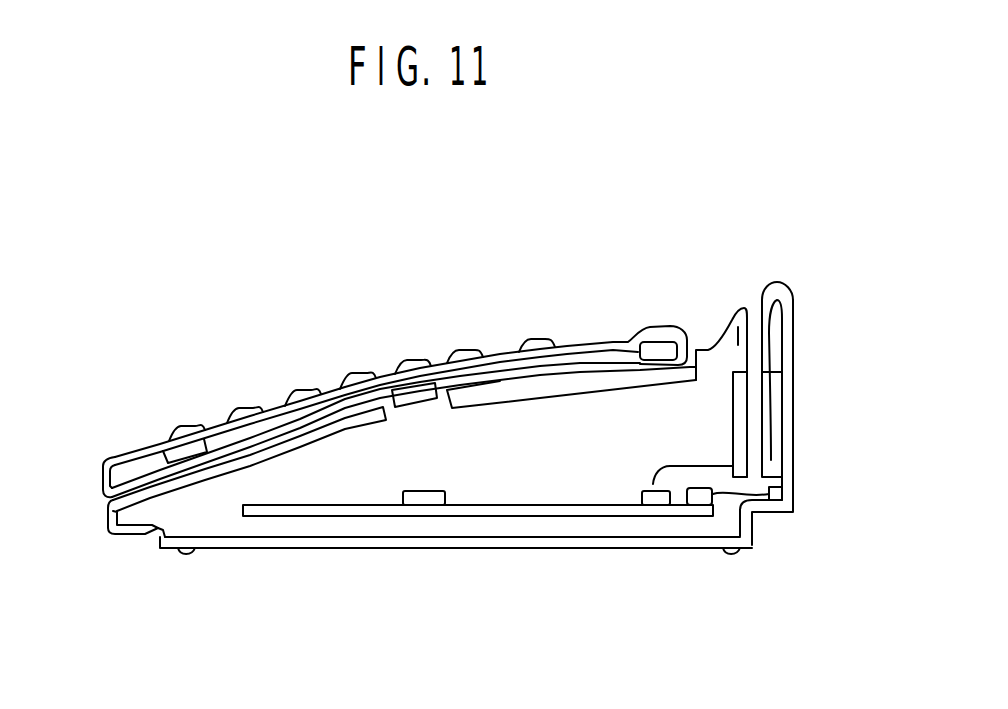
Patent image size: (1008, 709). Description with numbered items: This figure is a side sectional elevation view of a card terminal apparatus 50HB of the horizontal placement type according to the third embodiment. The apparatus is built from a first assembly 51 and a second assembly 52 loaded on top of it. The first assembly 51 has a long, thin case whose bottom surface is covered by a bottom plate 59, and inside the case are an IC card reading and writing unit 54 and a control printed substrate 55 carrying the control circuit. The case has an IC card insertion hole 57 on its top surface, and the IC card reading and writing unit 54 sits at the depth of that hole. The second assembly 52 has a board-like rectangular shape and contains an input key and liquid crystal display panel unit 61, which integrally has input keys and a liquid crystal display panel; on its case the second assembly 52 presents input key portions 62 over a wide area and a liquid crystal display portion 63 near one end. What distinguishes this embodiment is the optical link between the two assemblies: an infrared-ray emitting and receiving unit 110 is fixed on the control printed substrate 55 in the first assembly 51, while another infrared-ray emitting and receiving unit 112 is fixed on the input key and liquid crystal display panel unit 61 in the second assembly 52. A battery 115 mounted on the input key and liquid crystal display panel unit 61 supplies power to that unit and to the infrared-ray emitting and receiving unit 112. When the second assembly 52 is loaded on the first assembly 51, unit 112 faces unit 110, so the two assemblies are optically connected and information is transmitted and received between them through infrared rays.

The card terminal apparatus 50HB is at (637, 208).
The first assembly 51 is at (111, 538).
The second assembly 52 is at (152, 427).
The IC card reading and writing unit 54 is at (744, 412).
The control printed substrate 55 is at (347, 518).
The IC card insertion hole 57 is at (756, 306).
The bottom plate 59 is at (270, 549).
The input key and liquid crystal display panel unit 61 is at (323, 393).
The input key portions 62 is at (245, 403).
The liquid crystal display portion 63 is at (602, 337).
The infrared-ray emitting and receiving unit 110 is at (428, 502).
The infrared-ray emitting and receiving unit 112 is at (416, 393).
The battery 115 is at (106, 458).